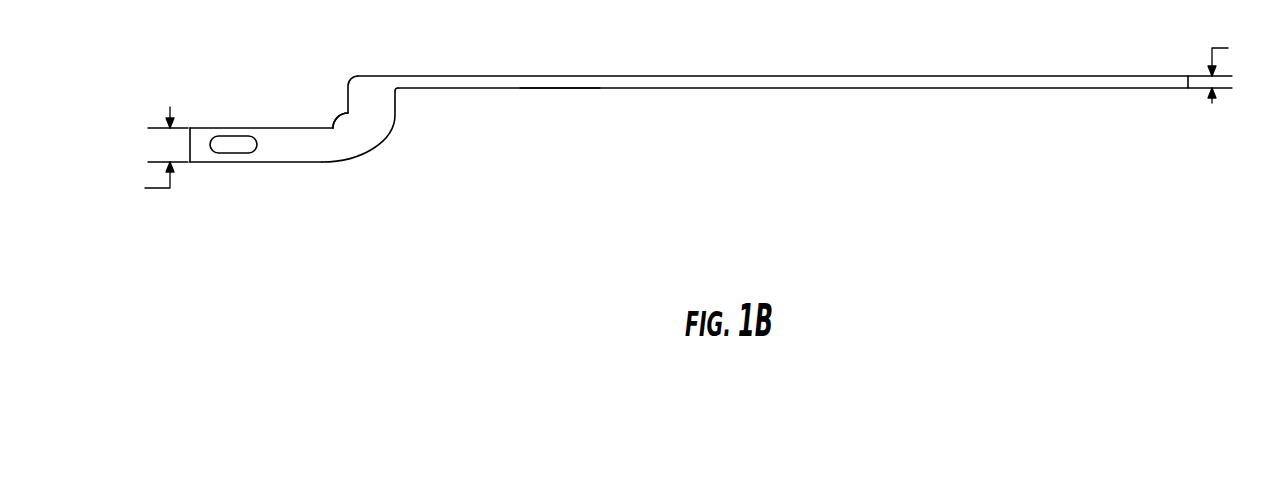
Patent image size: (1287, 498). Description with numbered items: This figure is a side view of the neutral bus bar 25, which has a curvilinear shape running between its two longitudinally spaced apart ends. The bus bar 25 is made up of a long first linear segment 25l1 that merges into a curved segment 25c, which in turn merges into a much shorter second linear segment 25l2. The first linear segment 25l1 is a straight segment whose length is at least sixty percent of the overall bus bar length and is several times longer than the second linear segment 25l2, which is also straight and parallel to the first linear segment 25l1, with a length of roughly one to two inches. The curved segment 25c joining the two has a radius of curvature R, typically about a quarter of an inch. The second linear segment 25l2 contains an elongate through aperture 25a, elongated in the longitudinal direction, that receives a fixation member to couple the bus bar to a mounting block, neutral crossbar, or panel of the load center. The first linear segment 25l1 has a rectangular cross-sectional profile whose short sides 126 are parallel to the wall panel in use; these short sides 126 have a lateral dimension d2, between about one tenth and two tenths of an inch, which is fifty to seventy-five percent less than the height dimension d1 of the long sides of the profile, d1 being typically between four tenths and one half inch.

The neutral bus bar 25 is at (684, 177).
The through aperture 25a is at (227, 145).
The curved segment 25c is at (343, 140).
The first linear segment 25l1 is at (868, 86).
The second linear segment 25l2 is at (282, 153).
The short sides 126 is at (558, 86).
The radius of curvature R is at (340, 121).
The height extent of long sides d1 is at (154, 154).
The lateral dimension of short sides d2 is at (1222, 68).